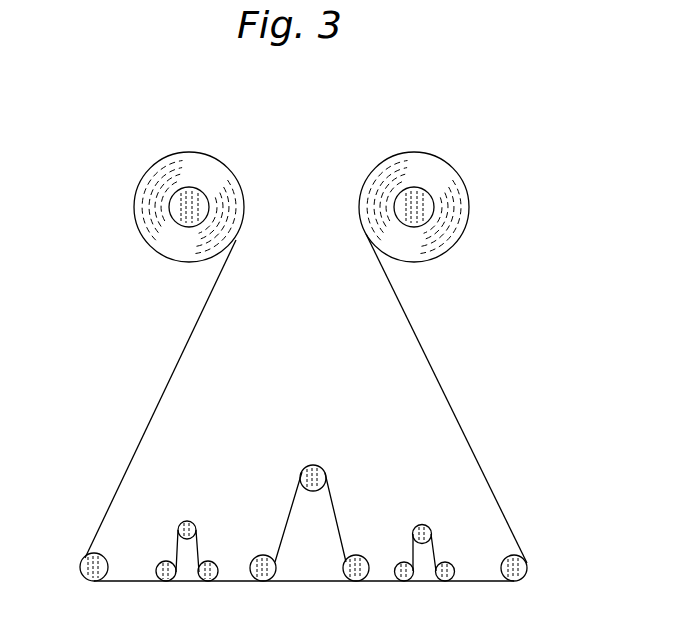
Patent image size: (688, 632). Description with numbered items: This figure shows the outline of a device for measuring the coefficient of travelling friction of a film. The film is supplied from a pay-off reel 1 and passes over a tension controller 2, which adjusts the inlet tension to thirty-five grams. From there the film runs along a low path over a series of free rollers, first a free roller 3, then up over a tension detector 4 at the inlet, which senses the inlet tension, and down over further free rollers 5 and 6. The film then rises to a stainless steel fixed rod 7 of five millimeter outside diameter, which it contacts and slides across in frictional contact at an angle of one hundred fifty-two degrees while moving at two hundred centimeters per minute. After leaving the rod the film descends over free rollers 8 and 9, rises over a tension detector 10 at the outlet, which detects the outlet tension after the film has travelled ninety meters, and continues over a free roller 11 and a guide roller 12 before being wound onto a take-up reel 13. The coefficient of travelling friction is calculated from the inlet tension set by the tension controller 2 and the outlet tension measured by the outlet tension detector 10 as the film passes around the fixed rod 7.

The pay-off reel 1 is at (170, 205).
The tension controller 2 is at (83, 559).
The free roller 3 is at (164, 581).
The tension detector (inlet) 4 is at (180, 524).
The free roller 5 is at (213, 581).
The free roller 6 is at (261, 581).
The stainless steel fixed rod 7 is at (322, 465).
The free roller 8 is at (348, 581).
The free roller 9 is at (412, 582).
The tension detector (outlet) 10 is at (419, 526).
The free roller 11 is at (454, 582).
The guide roller 12 is at (527, 574).
The take-up reel 13 is at (433, 198).